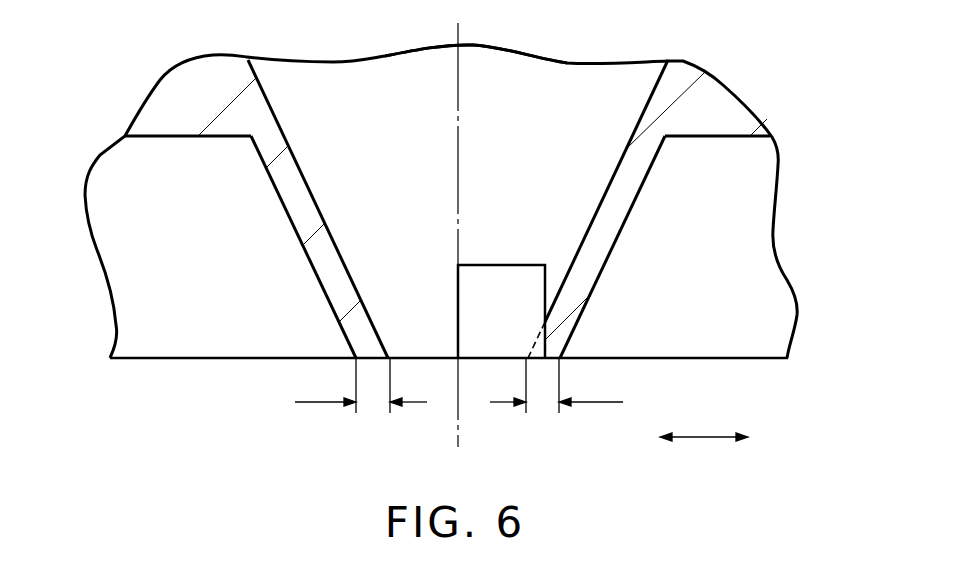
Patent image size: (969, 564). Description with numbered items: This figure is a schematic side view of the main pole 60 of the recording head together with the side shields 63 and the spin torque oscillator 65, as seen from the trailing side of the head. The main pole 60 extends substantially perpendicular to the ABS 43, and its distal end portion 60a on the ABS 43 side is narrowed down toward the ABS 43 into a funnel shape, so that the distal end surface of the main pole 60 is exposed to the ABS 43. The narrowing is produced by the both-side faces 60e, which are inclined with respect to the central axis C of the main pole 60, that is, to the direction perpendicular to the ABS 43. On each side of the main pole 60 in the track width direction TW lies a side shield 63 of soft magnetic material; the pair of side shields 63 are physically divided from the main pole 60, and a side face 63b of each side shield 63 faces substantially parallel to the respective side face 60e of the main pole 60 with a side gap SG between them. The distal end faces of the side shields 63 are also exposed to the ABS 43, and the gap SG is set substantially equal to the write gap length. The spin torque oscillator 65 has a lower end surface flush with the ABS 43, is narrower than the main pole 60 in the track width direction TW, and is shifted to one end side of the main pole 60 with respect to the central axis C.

The main pole 60 is at (578, 90).
The distal end portion 60a is at (372, 90).
The both-side face 60e is at (300, 175).
The side shield 63 is at (113, 246).
The side face 63b is at (309, 258).
The spin torque oscillator 65 is at (503, 266).
The ABS 43 is at (236, 359).
The side gap SG is at (459, 385).
The track width direction TW is at (704, 451).
The central axis C is at (458, 422).